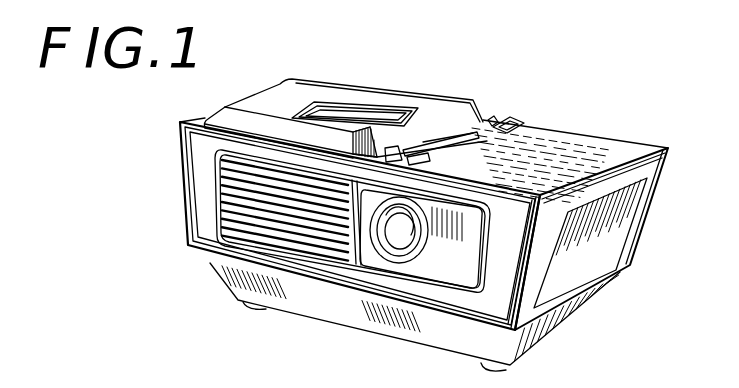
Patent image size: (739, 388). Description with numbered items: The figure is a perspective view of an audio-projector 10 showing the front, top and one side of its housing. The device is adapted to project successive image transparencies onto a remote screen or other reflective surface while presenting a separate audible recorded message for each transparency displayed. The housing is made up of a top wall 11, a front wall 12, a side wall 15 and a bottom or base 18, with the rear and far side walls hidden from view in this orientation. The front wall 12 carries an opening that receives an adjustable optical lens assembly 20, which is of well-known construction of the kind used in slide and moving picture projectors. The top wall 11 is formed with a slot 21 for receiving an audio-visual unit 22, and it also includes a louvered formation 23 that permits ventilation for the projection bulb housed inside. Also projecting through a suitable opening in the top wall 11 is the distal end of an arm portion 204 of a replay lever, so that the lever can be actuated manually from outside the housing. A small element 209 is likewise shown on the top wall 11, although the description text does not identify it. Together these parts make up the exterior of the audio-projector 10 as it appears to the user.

The audio-projector 10 is at (398, 50).
The top wall 11 is at (572, 148).
The front wall 12 is at (198, 169).
The side wall 15 is at (600, 247).
The bottom or base 18 is at (416, 322).
The adjustable optical lens assembly 20 is at (409, 236).
The slot 21 is at (494, 120).
The audio-visual unit 22 is at (436, 124).
The louvered formation 23 is at (325, 110).
The arm portion 204 is at (405, 158).
The indicator 209 is at (514, 117).